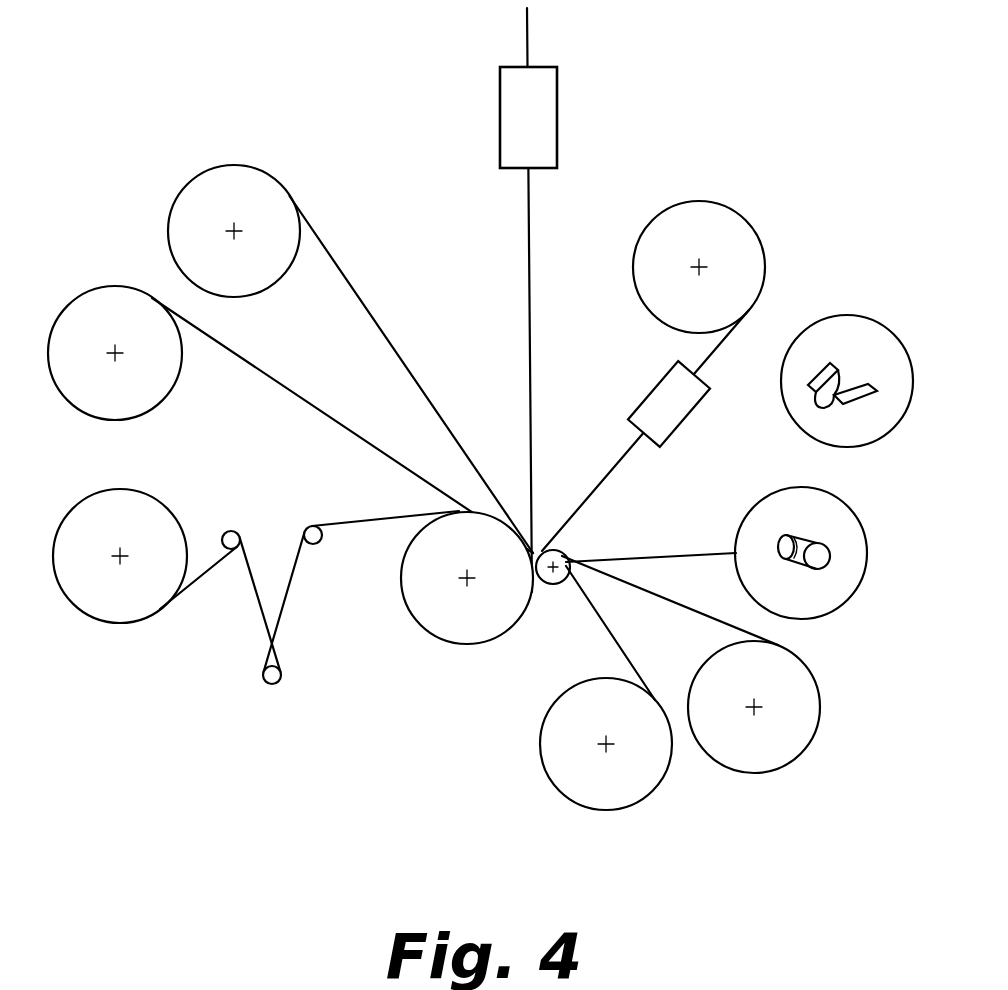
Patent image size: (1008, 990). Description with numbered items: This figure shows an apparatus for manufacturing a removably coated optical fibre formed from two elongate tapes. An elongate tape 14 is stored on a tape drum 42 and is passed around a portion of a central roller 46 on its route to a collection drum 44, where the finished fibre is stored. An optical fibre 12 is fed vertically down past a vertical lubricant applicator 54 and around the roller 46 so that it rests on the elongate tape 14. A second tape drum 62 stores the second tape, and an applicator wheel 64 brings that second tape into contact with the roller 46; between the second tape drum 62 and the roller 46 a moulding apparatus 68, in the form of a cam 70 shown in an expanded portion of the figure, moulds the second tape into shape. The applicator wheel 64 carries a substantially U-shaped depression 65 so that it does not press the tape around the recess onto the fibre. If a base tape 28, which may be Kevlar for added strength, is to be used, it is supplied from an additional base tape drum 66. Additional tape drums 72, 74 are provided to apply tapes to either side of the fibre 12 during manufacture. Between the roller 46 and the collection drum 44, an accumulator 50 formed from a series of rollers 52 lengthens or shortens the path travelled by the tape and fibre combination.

The optical fibre 12 is at (528, 232).
The elongate tape 14 is at (383, 332).
The base tape 28 is at (275, 377).
The tape drum 42 is at (272, 205).
The collection drum 44 is at (150, 528).
The roller 46 is at (430, 608).
The accumulator 50 is at (224, 676).
The rollers 52 is at (308, 532).
The vertical lubricant applicator 54 is at (505, 125).
The second tape drum 62 is at (745, 270).
The applicator wheel 64 is at (553, 583).
The U-shaped depression 65 is at (797, 563).
The base tape drum 66 is at (135, 382).
The moulding apparatus 68 is at (663, 403).
The cam 70 is at (872, 397).
The additional tape drum 72 is at (640, 775).
The additional tape drum 74 is at (797, 718).